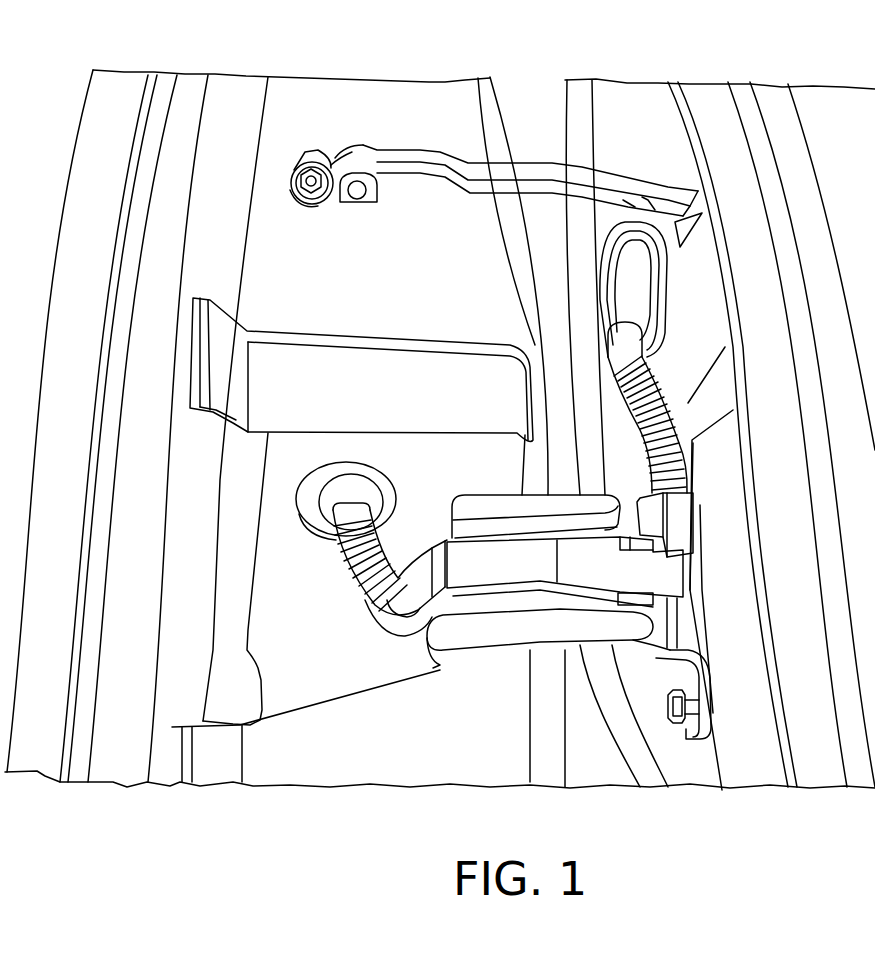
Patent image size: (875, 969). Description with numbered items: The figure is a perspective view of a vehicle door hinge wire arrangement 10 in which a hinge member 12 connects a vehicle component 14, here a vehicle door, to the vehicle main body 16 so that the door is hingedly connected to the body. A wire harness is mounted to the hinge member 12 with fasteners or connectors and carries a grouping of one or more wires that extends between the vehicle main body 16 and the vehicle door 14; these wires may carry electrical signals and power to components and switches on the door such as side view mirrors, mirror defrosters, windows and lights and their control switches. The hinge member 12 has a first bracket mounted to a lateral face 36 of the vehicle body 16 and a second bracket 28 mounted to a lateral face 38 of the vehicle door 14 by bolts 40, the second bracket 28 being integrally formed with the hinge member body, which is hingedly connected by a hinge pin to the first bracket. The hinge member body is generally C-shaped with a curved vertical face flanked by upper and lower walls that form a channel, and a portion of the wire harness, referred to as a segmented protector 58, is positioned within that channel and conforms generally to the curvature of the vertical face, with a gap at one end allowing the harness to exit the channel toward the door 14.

The vehicle door hinge wire arrangement 10 is at (431, 688).
The hinge member 12 is at (518, 623).
The vehicle component 14 is at (817, 103).
The vehicle main body 16 is at (407, 100).
The second bracket 28 is at (703, 686).
The lateral face 36 is at (403, 266).
The lateral face 38 is at (736, 693).
The bolts 40 is at (665, 718).
The segmented protector 58 is at (488, 568).